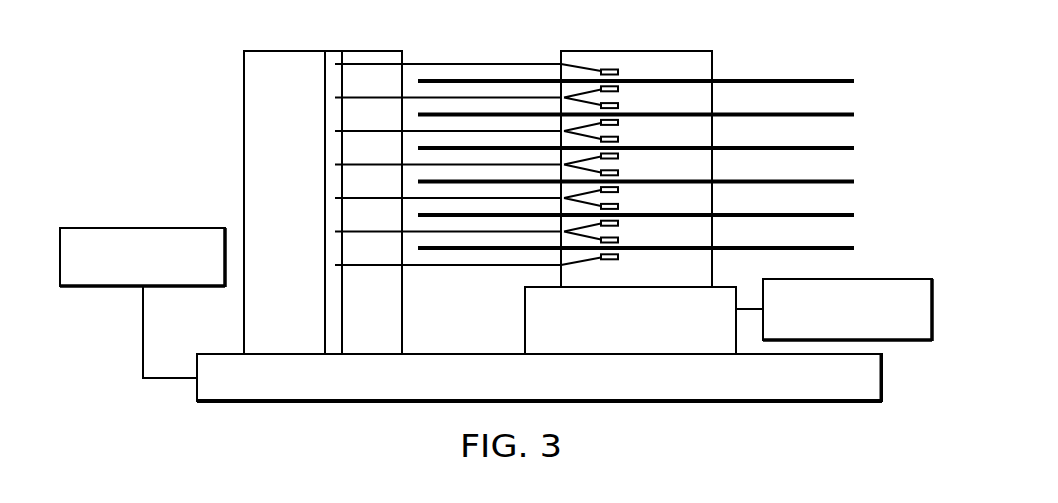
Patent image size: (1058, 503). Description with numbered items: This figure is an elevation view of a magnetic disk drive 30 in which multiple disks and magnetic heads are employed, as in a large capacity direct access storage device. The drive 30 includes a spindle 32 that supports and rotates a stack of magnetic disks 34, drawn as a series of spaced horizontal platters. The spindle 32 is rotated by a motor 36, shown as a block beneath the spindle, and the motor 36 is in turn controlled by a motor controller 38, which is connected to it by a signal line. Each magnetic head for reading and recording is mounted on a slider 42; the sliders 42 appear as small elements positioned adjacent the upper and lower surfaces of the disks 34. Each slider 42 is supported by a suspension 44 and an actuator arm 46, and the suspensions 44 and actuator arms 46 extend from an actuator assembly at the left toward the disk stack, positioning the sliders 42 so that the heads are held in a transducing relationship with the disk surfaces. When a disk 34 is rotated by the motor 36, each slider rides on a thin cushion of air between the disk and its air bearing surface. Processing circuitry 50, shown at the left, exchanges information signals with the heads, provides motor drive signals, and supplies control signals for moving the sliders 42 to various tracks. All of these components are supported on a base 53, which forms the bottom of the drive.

The magnetic disk drive 30 is at (766, 48).
The spindle 32 is at (689, 51).
The magnetic disk 34 is at (830, 82).
The motor 36 is at (653, 334).
The motor controller 38 is at (917, 341).
The slider 42 is at (624, 31).
The suspension 44 is at (588, 31).
The actuator arm 46 is at (508, 98).
The processing circuitry 50 is at (120, 228).
The base 53 is at (257, 395).